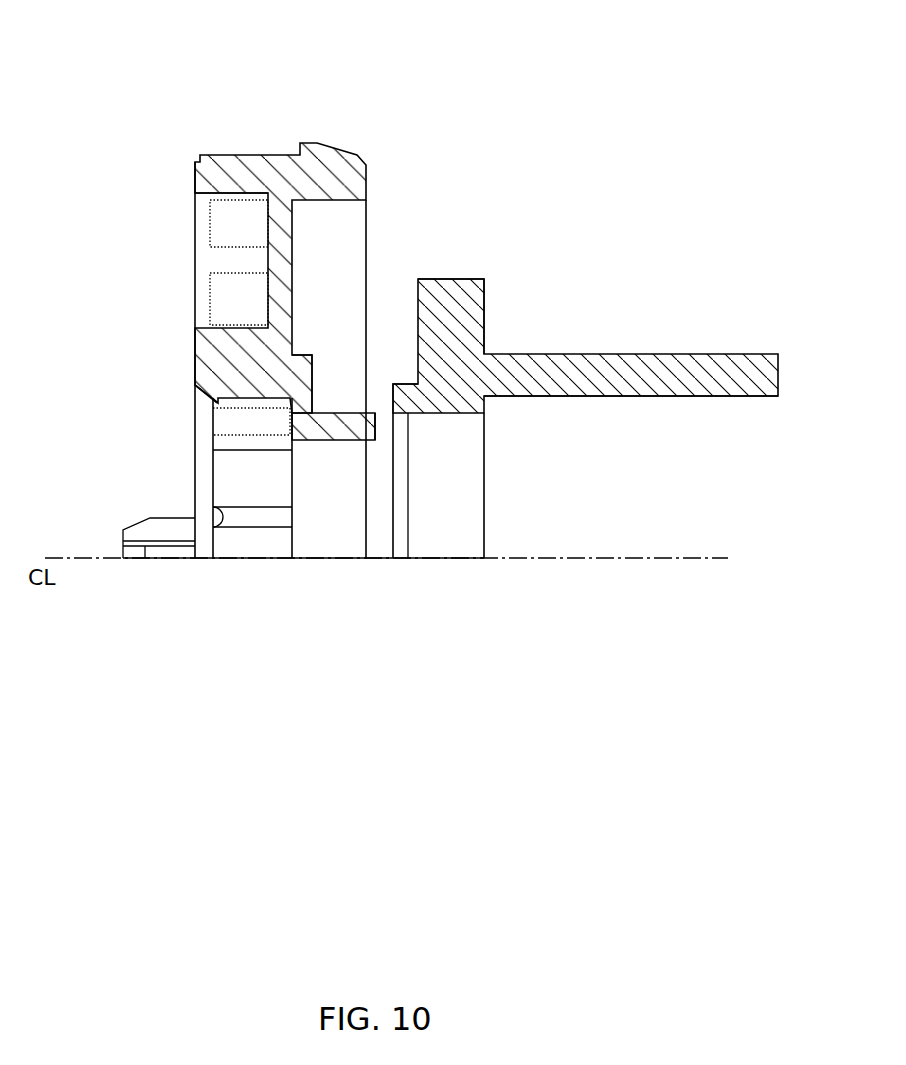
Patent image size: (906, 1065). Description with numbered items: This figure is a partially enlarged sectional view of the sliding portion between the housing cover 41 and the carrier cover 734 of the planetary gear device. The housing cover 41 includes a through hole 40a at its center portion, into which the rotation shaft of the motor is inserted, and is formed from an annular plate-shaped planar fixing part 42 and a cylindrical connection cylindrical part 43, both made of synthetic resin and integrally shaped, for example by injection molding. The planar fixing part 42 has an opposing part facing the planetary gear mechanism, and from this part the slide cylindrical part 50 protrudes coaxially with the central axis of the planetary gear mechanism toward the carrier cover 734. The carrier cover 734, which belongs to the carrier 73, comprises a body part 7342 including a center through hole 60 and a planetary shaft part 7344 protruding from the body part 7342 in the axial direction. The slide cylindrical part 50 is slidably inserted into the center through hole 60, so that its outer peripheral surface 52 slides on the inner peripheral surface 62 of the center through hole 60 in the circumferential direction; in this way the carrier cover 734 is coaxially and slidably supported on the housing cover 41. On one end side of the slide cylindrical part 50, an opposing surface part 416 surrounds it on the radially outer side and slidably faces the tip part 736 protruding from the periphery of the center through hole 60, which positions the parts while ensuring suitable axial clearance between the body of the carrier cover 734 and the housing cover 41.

The housing cover 41 is at (235, 309).
The planar fixing part 42 is at (191, 188).
The connection cylindrical part 43 is at (300, 201).
The opposing surface part 416 is at (305, 396).
The through hole 40a is at (298, 468).
The slide cylindrical part 50 is at (330, 404).
The outer peripheral surface 52 is at (362, 413).
The bracket 73 is at (476, 385).
The carrier cover 734 is at (537, 348).
The body part 7342 is at (462, 345).
The planetary shaft part 7344 is at (640, 396).
The tip part 736 is at (394, 384).
The center through hole 60 is at (428, 457).
The inner peripheral surface 62 is at (462, 415).